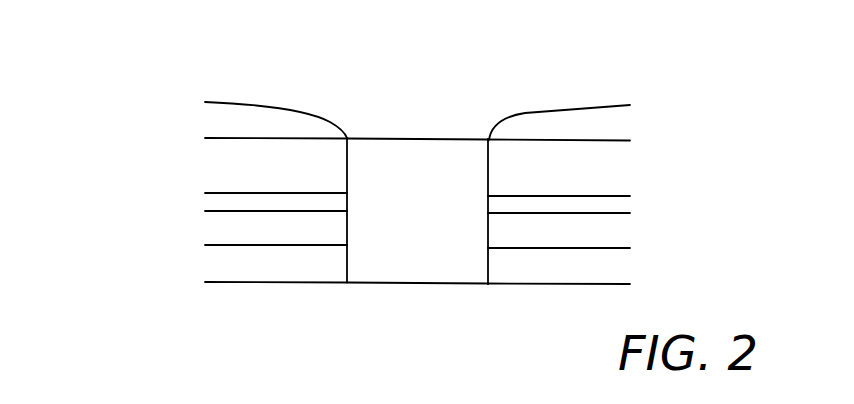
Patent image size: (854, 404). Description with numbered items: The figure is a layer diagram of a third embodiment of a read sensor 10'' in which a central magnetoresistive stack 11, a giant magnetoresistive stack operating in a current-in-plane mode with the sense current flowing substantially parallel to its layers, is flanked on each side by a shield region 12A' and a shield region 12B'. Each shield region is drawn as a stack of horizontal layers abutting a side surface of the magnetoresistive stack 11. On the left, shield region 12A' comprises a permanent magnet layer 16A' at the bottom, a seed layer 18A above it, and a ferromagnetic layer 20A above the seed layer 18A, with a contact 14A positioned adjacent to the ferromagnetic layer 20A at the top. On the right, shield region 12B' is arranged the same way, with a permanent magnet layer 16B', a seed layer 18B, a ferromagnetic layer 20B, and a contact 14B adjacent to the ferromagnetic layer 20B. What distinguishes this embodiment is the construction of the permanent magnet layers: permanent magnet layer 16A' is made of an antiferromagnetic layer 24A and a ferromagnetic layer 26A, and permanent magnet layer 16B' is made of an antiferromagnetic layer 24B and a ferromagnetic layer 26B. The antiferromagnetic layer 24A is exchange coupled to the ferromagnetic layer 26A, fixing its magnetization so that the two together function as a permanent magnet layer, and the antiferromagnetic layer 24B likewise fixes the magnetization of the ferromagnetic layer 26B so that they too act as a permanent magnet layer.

The read sensor 10'' is at (436, 153).
The magnetoresistive stack 11 is at (383, 153).
The shield region 12A' is at (192, 192).
The shield region 12B' is at (661, 196).
The contact 14A is at (223, 120).
The contact 14B is at (602, 123).
The permanent magnet layer 16A' is at (231, 247).
The permanent magnet layer 16B' is at (612, 249).
The seed layer 18A is at (222, 200).
The seed layer 18B is at (613, 203).
The ferromagnetic layer 20A is at (230, 173).
The ferromagnetic layer 20B is at (602, 168).
The antiferromagnetic layer 24A is at (276, 267).
The antiferromagnetic layer 24B is at (559, 269).
The ferromagnetic layer 26A is at (276, 232).
The ferromagnetic layer 26B is at (559, 235).